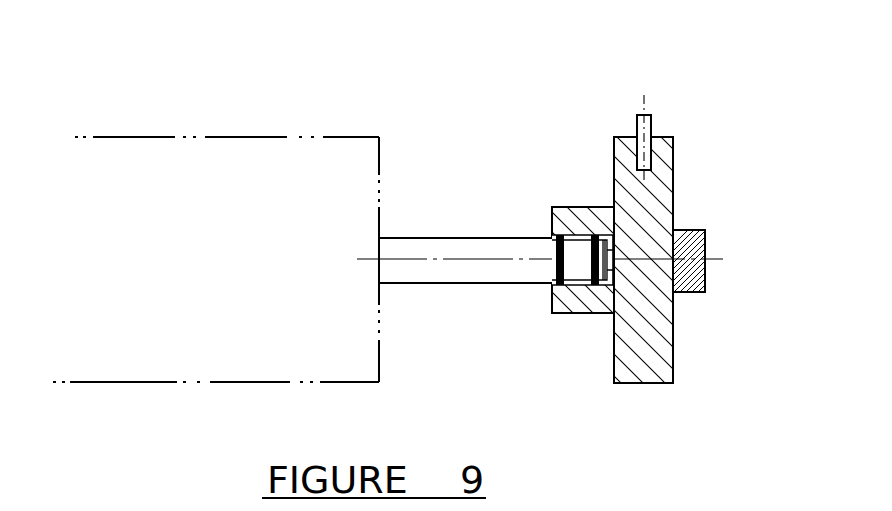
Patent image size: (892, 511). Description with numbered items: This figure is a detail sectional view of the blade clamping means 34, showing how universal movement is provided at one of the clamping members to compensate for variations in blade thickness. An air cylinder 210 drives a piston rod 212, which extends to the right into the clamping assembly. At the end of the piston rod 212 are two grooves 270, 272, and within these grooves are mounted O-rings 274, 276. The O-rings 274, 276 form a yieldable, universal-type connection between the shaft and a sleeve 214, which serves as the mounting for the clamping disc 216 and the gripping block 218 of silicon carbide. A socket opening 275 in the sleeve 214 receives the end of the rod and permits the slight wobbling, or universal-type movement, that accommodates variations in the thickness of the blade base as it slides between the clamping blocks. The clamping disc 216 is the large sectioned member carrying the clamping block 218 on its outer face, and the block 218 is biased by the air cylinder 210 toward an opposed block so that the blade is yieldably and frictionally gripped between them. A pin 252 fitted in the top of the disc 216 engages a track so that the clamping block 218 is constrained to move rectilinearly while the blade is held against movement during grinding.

The drive coupling assembly 34 is at (403, 103).
The air cylinder 210 is at (232, 137).
The piston rod 212 is at (455, 238).
The sleeve 214 is at (583, 207).
The clamping disc 216 is at (673, 333).
The clamping block 218 is at (687, 230).
The pin 252 is at (638, 115).
The groove 270 is at (553, 273).
The groove 272 is at (561, 288).
The O-ring 274 is at (555, 235).
The socket opening 275 is at (560, 235).
The O-ring 276 is at (595, 285).